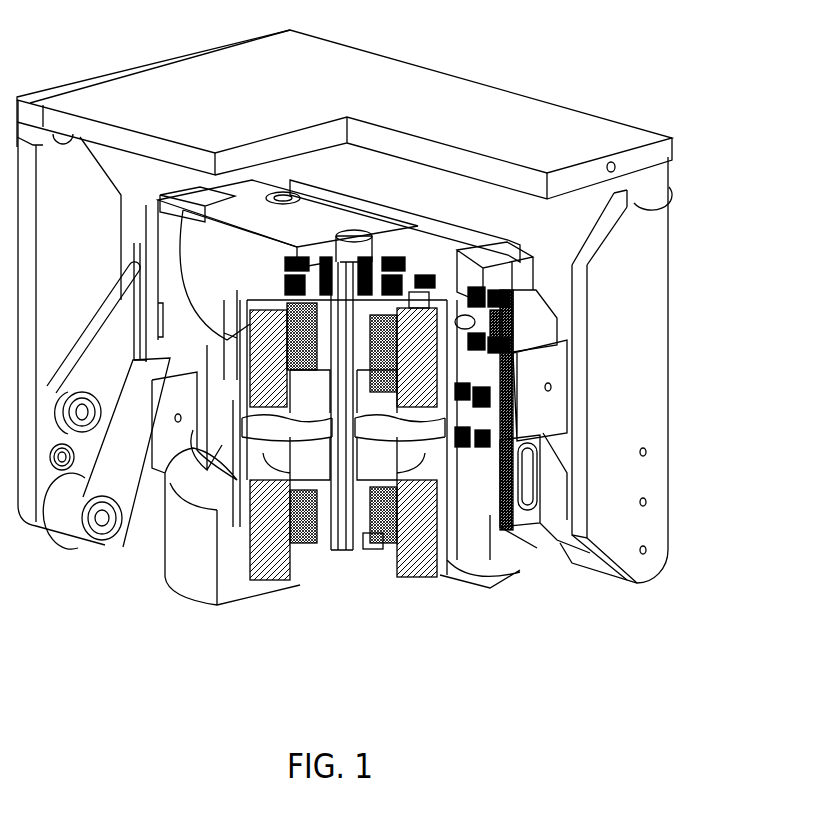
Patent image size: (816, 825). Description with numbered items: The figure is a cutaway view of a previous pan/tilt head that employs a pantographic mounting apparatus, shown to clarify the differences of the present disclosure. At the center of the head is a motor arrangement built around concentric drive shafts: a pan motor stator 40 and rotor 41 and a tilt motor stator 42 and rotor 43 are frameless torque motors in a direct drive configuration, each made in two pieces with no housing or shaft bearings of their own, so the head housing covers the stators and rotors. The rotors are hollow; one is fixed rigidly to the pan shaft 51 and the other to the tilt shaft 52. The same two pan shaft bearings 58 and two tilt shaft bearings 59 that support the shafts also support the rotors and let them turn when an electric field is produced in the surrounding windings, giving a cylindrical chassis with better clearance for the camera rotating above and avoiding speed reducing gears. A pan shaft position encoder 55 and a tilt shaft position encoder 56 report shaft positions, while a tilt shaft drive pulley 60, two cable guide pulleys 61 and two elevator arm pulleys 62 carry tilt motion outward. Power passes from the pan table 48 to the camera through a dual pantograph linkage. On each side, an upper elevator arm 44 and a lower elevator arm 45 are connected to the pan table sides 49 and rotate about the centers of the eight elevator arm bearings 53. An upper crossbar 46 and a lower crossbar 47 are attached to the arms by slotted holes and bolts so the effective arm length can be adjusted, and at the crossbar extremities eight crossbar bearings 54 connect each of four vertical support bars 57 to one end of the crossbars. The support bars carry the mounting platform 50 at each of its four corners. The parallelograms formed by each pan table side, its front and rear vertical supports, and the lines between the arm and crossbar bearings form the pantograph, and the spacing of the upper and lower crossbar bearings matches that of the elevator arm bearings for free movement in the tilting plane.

The pan motor stator 40 is at (440, 350).
The pan motor rotor 41 is at (400, 357).
The tilt motor stator 42 is at (268, 528).
The tilt motor rotor 43 is at (374, 550).
The upper elevator arm 44 is at (133, 268).
The lower elevator arm 45 is at (507, 518).
The upper crossbar 46 is at (307, 351).
The lower crossbar 47 is at (336, 455).
The pan table 48 is at (339, 392).
The pan table side 49 is at (190, 197).
The mounting platform 50 is at (344, 114).
The pan shaft 51 is at (338, 262).
The tilt shaft 52 is at (342, 442).
The elevator arm bearings 53 is at (457, 480).
The crossbar bearings 54 is at (90, 530).
The pan shaft position encoder 55 is at (343, 372).
The tilt shaft position encoder 56 is at (344, 458).
The vertical support bars 57 is at (345, 341).
The pan shaft bearings 58 is at (405, 293).
The tilt shaft bearings 59 is at (372, 257).
The tilt shaft drive pulley 60 is at (352, 238).
The cable guide pulleys 61 is at (290, 197).
The elevator arm pulleys 62 is at (510, 297).